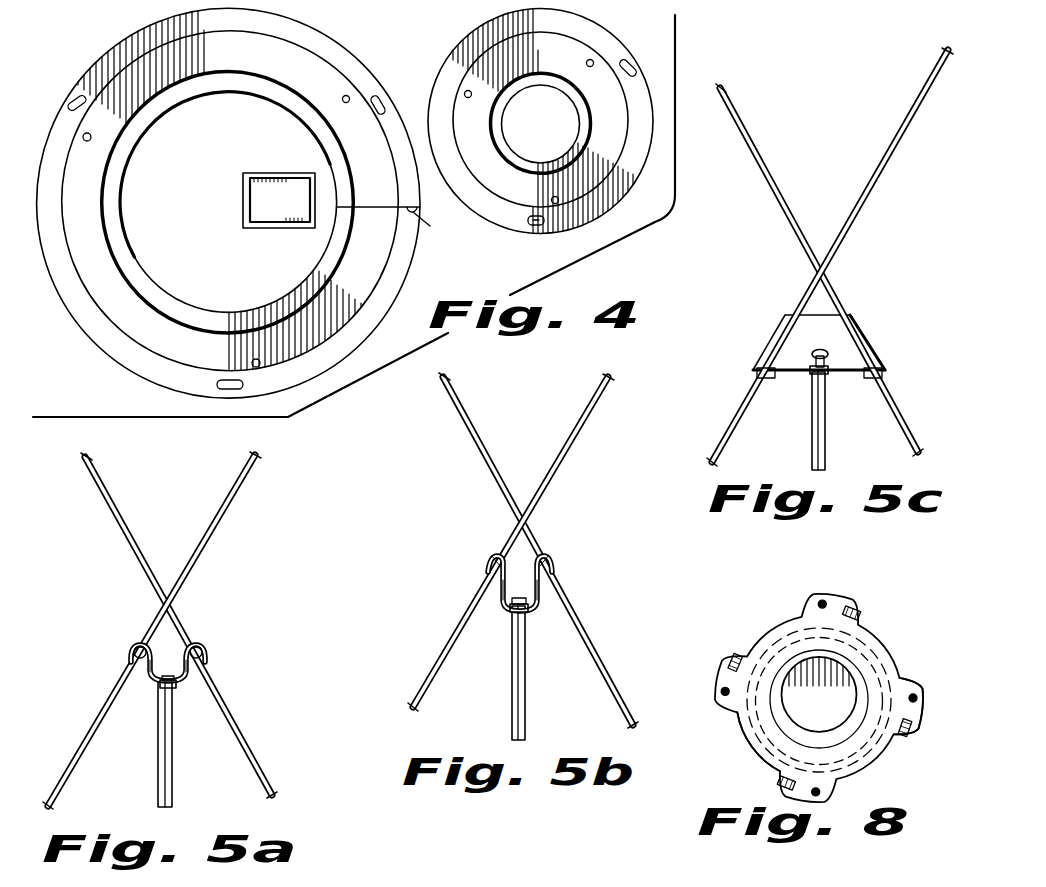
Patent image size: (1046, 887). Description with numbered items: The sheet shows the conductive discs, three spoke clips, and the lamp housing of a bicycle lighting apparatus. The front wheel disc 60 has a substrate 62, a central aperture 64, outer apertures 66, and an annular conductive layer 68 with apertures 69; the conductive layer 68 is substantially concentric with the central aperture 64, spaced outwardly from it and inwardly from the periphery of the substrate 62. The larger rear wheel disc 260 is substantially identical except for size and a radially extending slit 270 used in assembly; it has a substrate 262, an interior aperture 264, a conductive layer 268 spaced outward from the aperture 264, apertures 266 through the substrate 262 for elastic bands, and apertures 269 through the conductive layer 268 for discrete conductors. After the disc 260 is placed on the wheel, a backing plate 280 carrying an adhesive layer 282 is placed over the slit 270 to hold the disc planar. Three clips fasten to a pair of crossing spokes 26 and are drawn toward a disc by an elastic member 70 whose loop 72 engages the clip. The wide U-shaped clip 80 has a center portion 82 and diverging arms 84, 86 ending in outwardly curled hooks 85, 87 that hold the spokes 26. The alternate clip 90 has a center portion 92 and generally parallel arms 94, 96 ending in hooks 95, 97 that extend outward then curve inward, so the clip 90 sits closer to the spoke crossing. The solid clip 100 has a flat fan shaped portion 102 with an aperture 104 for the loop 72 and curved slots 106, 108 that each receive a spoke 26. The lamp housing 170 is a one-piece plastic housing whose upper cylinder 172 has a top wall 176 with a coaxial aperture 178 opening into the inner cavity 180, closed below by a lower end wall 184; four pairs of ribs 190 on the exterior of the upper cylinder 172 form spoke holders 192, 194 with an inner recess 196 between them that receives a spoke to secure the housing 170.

In FIG. 5c, the spokes 26 is at (776, 185).
In FIG. 5a, the spokes 26 is at (205, 537).
In FIG. 5b, the spokes 26 is at (558, 455).
In FIG. 4, the disc 60 is at (484, 36).
In FIG. 4, the substrate 62 is at (612, 45).
In FIG. 4, the central aperture 64 is at (542, 164).
In FIG. 4, the outer apertures 66 is at (633, 65).
In FIG. 4, the conductive layer 68 is at (513, 197).
In FIG. 4, the apertures 69 is at (464, 93).
In FIG. 5c, the elastic member 70 is at (812, 450).
In FIG. 5a, the elastic member 70 is at (160, 782).
In FIG. 5b, the elastic member 70 is at (525, 700).
In FIG. 5c, the loop 72 is at (814, 378).
In FIG. 5a, the loop 72 is at (160, 688).
In FIG. 5b, the loop 72 is at (514, 616).
In FIG. 5a, the clip 80 is at (206, 610).
In FIG. 5a, the center portion 82 is at (178, 687).
In FIG. 5a, the arm 84 is at (180, 688).
In FIG. 5a, the hook 85 is at (204, 650).
In FIG. 5a, the arm 86 is at (145, 688).
In FIG. 5a, the hook 87 is at (134, 645).
In FIG. 5b, the clip 90 is at (554, 526).
In FIG. 5b, the center portion 92 is at (530, 606).
In FIG. 5b, the arm 94 is at (540, 600).
In FIG. 5b, the hook 95 is at (550, 560).
In FIG. 5b, the arm 96 is at (500, 600).
In FIG. 5b, the hook 97 is at (492, 560).
In FIG. 5c, the solid clip 100 is at (775, 322).
In FIG. 5c, the fan shaped portion 102 is at (872, 338).
In FIG. 5c, the aperture 104 is at (820, 352).
In FIG. 5c, the curved slot 106 is at (872, 378).
In FIG. 5c, the curved slot 108 is at (752, 374).
In FIG. 8, the housing 170 is at (775, 607).
In FIG. 8, the upper cylinder 172 is at (750, 748).
In FIG. 8, the top wall 176 is at (860, 630).
In FIG. 8, the aperture 178 is at (832, 731).
In FIG. 8, the inner cavity 180 is at (790, 670).
In FIG. 8, the lower end wall 184 is at (855, 672).
In FIG. 8, the ribs 190 is at (722, 675).
In FIG. 8, the spoke holder 192 is at (908, 676).
In FIG. 8, the spoke holder 194 is at (898, 733).
In FIG. 8, the inner recess 196 is at (918, 700).
In FIG. 4, the disc 260 is at (88, 57).
In FIG. 4, the substrate 262 is at (306, 25).
In FIG. 4, the interior aperture 264 is at (187, 307).
In FIG. 4, the apertures 266 is at (378, 95).
In FIG. 4, the conductive layer 268 is at (377, 260).
In FIG. 4, the apertures 269 is at (344, 98).
In FIG. 4, the slit 270 is at (402, 224).
In FIG. 4, the backing plate 280 is at (243, 200).
In FIG. 4, the adhesive layer 282 is at (281, 178).